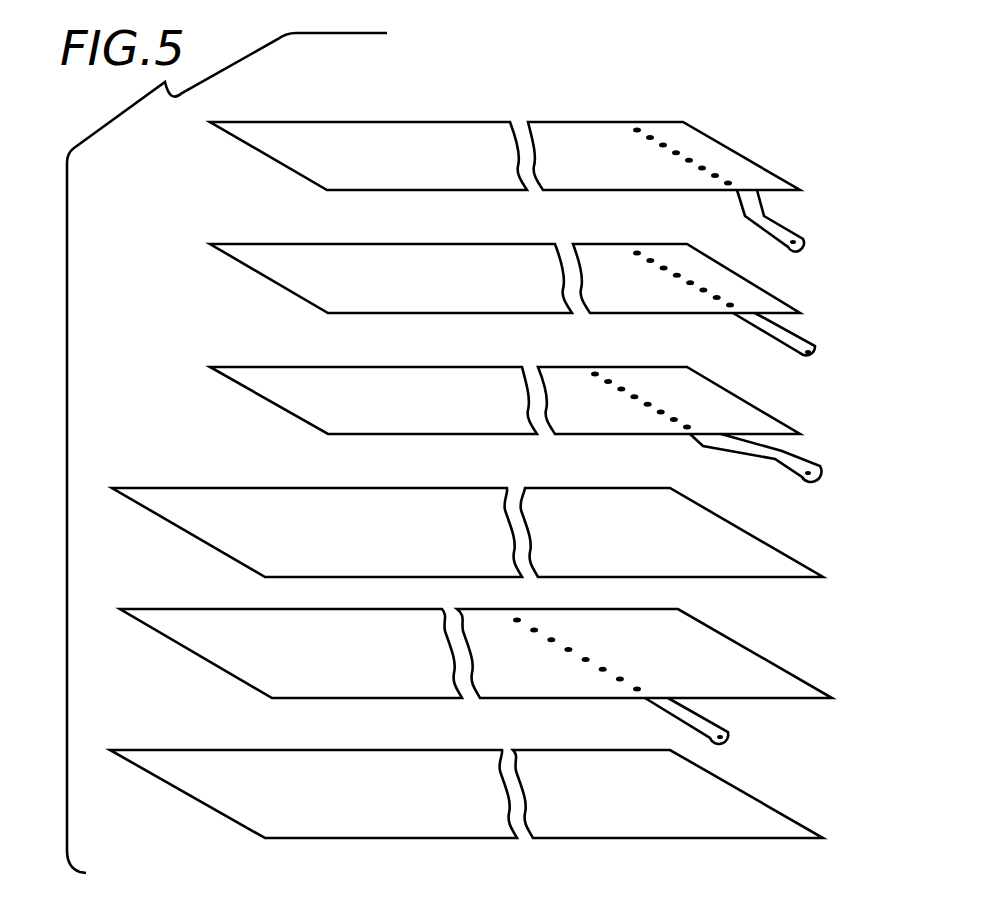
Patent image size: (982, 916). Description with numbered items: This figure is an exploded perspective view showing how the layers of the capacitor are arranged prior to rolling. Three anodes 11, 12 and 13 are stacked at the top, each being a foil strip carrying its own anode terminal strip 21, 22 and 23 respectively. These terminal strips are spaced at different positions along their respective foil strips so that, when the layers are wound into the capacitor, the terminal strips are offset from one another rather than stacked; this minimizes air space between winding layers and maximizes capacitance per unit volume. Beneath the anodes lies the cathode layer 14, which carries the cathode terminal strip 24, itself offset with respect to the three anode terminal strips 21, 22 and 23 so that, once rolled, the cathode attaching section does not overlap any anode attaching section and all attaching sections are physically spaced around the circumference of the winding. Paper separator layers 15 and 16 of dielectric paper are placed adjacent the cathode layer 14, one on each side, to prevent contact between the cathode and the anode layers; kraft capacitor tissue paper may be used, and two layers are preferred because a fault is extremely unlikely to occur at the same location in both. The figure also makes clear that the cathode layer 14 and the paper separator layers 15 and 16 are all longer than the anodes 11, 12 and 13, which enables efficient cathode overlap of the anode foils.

The anode 11 is at (458, 104).
The anode 12 is at (252, 228).
The anode 13 is at (255, 346).
The cathode layer 14 is at (200, 471).
The paper separator layer 15 is at (182, 589).
The paper separator layer 16 is at (190, 729).
The anode terminal strip 21 is at (802, 217).
The anode terminal strip 22 is at (826, 331).
The anode terminal strip 23 is at (819, 450).
The cathode terminal strip 24 is at (750, 729).